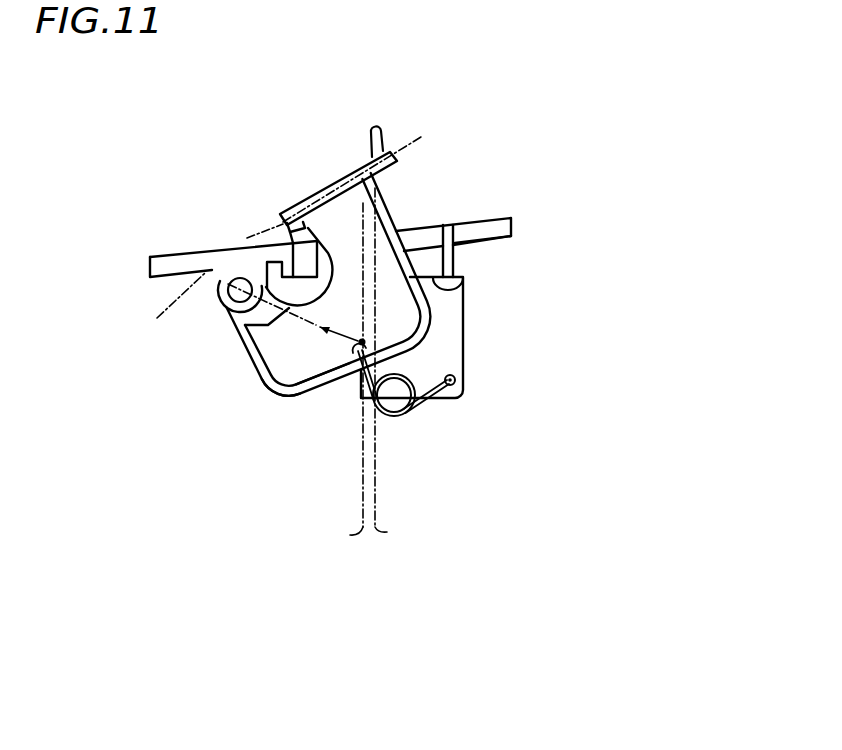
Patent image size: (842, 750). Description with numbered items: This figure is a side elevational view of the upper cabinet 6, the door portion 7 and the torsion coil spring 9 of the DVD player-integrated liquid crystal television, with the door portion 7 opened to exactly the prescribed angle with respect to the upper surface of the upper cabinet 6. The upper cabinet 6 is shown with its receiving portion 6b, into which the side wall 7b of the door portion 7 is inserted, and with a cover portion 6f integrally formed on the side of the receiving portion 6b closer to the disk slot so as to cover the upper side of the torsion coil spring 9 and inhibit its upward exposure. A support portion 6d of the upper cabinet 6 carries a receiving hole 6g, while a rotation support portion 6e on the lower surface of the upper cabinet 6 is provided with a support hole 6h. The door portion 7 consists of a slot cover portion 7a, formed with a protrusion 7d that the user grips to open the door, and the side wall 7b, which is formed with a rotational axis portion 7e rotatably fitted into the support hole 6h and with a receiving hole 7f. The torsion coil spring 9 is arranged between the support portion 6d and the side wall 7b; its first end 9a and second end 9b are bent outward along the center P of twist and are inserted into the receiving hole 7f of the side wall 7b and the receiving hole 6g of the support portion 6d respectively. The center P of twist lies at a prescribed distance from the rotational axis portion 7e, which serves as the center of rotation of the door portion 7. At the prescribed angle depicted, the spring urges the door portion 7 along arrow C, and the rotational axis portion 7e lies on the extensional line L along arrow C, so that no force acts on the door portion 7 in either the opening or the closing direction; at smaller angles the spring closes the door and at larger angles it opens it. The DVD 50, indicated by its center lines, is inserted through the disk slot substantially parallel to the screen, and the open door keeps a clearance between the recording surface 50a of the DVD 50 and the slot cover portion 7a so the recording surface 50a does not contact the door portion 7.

The upper cabinet 6 is at (505, 221).
The rotation support portion 6e is at (252, 264).
The support hole 6h is at (230, 283).
The cover portion 6f is at (430, 256).
The receiving portion 6b is at (440, 279).
The support portion 6d is at (456, 333).
The receiving hole 6g is at (456, 378).
The door portion 7 is at (268, 350).
The slot cover portion 7a is at (326, 188).
The protrusion 7d is at (375, 127).
The rotational axis portion 7e is at (228, 303).
The receiving hole 7f is at (330, 347).
The side wall 7b is at (290, 380).
The torsion coil spring 9 is at (409, 412).
The first end 9a is at (356, 350).
The second end 9b is at (447, 388).
The DVD 50 is at (378, 500).
The recording surface 50a is at (362, 487).
The extensional line L is at (174, 303).
The arrow C is at (297, 315).
The center of twist P is at (396, 400).